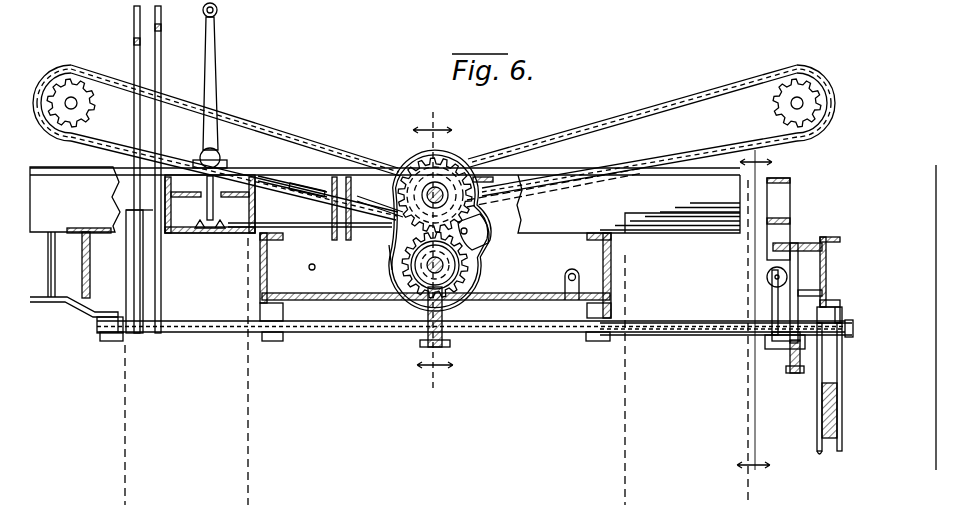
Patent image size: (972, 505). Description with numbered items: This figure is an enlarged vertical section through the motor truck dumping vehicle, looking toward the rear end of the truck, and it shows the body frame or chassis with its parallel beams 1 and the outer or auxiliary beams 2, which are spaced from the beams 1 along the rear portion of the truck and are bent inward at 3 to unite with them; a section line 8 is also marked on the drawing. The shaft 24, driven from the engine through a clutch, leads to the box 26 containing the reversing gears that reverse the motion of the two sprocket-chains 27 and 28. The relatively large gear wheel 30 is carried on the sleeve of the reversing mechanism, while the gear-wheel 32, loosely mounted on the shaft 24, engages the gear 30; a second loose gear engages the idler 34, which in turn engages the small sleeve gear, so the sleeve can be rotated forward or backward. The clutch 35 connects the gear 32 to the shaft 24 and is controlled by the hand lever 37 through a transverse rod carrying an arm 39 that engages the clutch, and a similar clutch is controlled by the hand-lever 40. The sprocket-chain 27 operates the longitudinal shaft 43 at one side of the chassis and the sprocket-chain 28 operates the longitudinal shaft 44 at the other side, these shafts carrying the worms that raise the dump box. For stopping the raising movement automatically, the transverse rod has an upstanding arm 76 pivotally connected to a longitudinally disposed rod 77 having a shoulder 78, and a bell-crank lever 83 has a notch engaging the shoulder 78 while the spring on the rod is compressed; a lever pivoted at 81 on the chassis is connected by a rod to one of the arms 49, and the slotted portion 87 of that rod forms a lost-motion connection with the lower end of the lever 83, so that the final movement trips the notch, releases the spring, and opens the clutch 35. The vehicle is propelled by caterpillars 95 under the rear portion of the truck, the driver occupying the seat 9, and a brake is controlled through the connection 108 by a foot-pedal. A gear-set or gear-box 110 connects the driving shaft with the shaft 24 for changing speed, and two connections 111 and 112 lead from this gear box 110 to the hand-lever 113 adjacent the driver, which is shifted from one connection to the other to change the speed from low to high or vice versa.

The parallel beams 1 is at (258, 273).
The outer or auxiliary beams 2 is at (48, 265).
The inward bend 3 is at (90, 267).
The section line 8- 8 is at (762, 327).
The seat 9 is at (433, 244).
The shaft 24 is at (410, 299).
The box 26 is at (483, 277).
The sprocket-chain 27 is at (284, 130).
The sprocket-chain 28 is at (689, 95).
The large gear wheel 30 is at (452, 158).
The large gear-wheel 32 is at (412, 296).
The idler 34 is at (488, 252).
The clutch 35 is at (470, 298).
The hand lever 37 is at (134, 50).
The arm 39 is at (450, 340).
The hand-lever 40 is at (161, 36).
The longitudinal shaft 43 is at (71, 105).
The longitudinal shaft 44 is at (800, 101).
The arms 49 is at (790, 232).
The upstanding arm 76 is at (790, 292).
The longitudinally disposed rod 77 is at (781, 276).
The shoulder 78 is at (767, 277).
The pivot 81 is at (770, 345).
The bell-crank lever 83 is at (790, 298).
The slotted portion 87 is at (792, 373).
The caterpillars 95 is at (245, 465).
The connection 108 is at (300, 257).
The gear-set or gear-box 110 is at (389, 272).
The connection 111 is at (379, 231).
The connection 112 is at (384, 243).
The hand-lever 113 is at (215, 48).